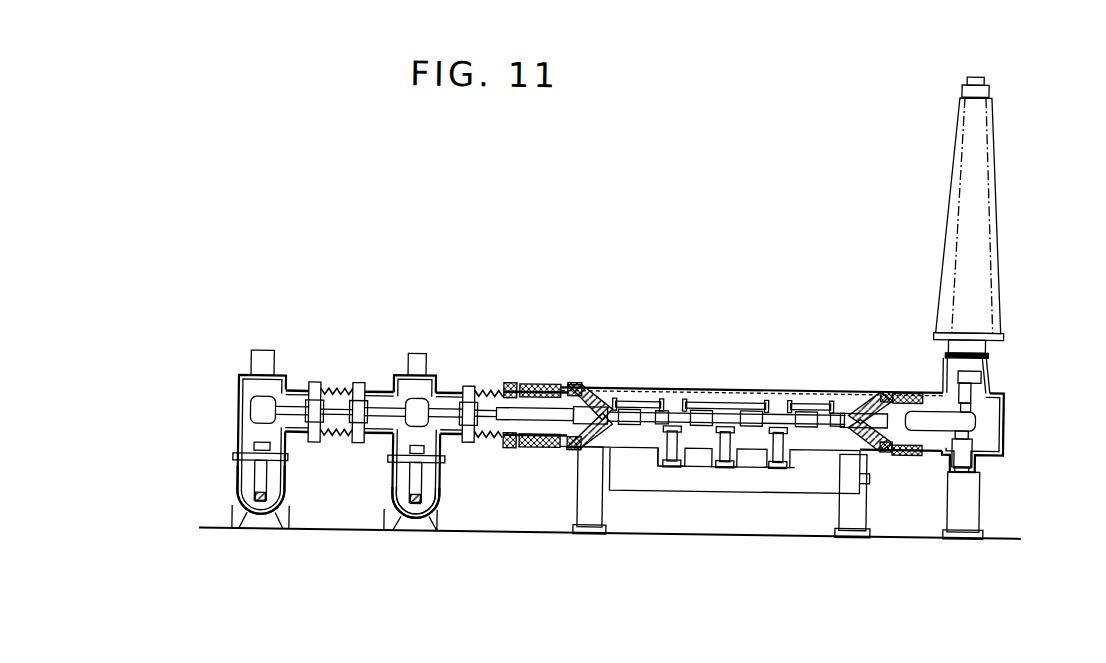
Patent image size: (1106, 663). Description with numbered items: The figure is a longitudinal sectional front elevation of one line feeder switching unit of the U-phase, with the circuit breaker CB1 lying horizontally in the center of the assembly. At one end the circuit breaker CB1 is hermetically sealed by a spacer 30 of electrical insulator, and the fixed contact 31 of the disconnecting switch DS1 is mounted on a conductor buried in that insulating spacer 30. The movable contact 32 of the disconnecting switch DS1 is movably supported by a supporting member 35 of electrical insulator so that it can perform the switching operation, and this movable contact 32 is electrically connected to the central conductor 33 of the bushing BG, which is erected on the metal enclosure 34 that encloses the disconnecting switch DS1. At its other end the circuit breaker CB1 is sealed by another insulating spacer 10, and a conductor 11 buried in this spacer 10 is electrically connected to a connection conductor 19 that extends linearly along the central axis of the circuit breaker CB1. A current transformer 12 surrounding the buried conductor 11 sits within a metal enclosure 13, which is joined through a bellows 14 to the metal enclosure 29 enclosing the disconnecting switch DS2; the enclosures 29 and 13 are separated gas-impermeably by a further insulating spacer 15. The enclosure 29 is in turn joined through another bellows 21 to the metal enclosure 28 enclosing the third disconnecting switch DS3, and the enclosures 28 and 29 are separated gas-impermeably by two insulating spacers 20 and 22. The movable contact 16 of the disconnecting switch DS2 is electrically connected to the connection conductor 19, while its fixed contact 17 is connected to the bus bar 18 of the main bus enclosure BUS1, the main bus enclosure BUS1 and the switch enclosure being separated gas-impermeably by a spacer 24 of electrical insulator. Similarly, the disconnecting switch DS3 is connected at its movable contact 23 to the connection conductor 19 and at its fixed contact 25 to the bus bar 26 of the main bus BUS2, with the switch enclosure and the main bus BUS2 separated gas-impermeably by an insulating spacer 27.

The spacer of electrical insulator 10 is at (592, 402).
The conductor buried in insulating spacer 11 is at (575, 388).
The current transformer 12 is at (512, 448).
The enclosure of metal 13 is at (532, 386).
The bellows 14 is at (498, 395).
The spacer of electrical insulator 15 is at (468, 390).
The movable contact 16 is at (430, 440).
The fixed contact 17 is at (390, 462).
The bus bar 18 is at (416, 522).
The connection conductor 19 is at (380, 395).
The spacer of electrical insulator 20 is at (358, 390).
The bellows 21 is at (336, 394).
The spacer of electrical insulator 22 is at (312, 392).
The movable contact 23 is at (252, 412).
The spacer of electrical insulator 24 is at (436, 482).
The fixed contact 25 is at (254, 450).
The bus bar 26 is at (258, 504).
The spacer of electrical insulator 27 is at (234, 463).
The enclosure of metal 28 is at (240, 382).
The enclosure of metal 29 is at (442, 395).
The spacer of electrical insulator 30 is at (856, 404).
The fixed contact 31 is at (884, 394).
The movable contact 32 is at (905, 450).
The central conductor 33 is at (975, 396).
The enclosure of metal 34 is at (1003, 418).
The supporting member of electrical insulator 35 is at (990, 445).
The bushing BG is at (950, 224).
The main bus enclosure BUS1 is at (440, 520).
The main bus BUS2 is at (287, 500).
The circuit breaker CB1 is at (668, 387).
The disconnecting switch DS1 is at (938, 448).
The disconnecting switch DS2 is at (438, 455).
The third disconnecting switch DS3 is at (287, 442).